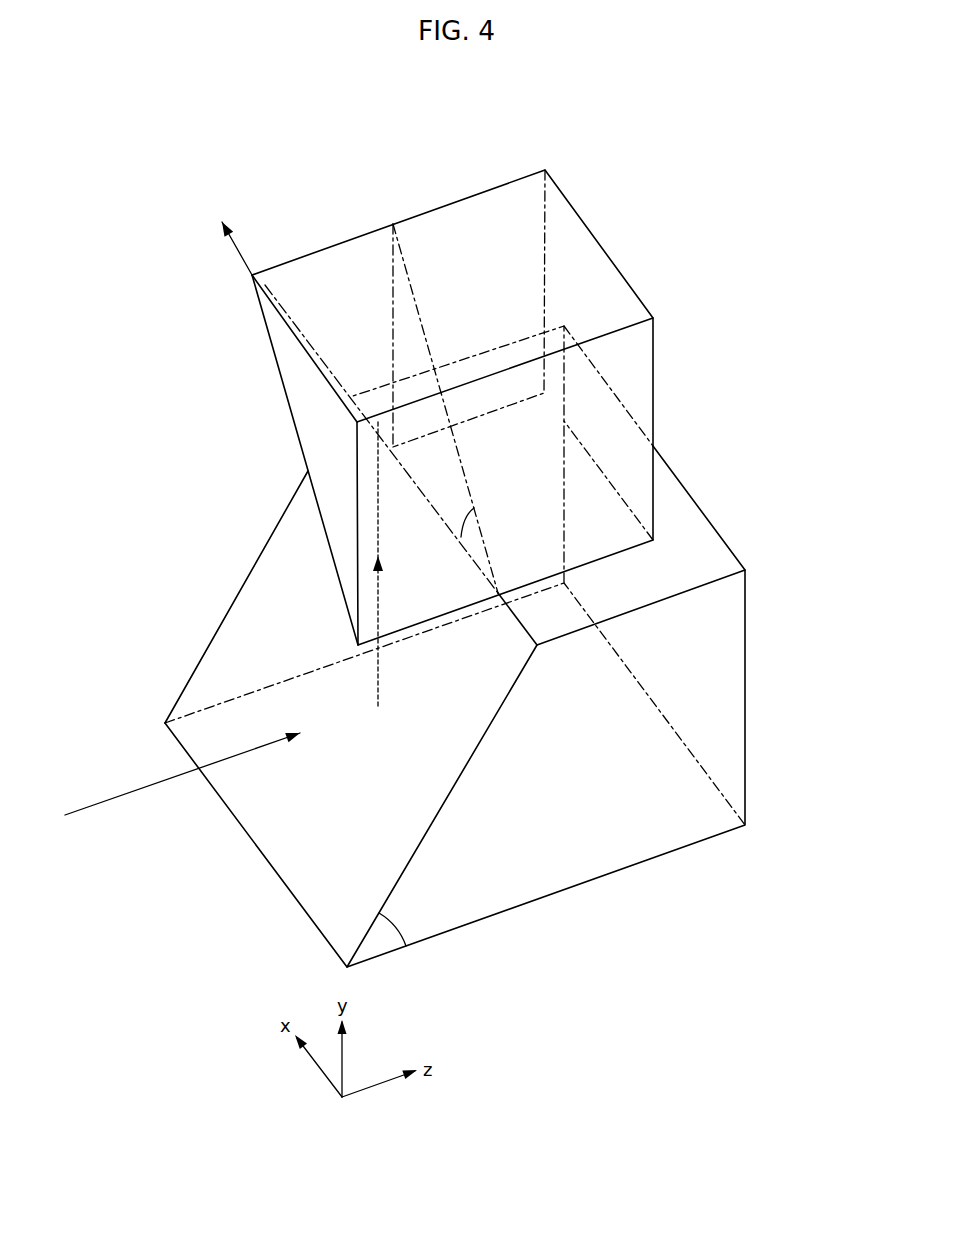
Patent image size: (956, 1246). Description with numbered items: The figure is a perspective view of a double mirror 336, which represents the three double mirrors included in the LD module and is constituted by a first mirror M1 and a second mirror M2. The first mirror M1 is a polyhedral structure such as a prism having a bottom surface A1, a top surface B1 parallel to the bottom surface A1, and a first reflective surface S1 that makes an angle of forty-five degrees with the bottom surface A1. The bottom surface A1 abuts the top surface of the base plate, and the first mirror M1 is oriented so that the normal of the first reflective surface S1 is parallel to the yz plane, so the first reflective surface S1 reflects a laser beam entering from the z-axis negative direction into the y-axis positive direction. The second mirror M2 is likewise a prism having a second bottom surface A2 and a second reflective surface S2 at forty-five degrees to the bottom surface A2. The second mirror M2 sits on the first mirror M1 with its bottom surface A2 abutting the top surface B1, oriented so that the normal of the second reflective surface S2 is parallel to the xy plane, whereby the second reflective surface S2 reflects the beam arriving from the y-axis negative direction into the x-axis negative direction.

The double mirror 336 is at (701, 170).
The first mirror M1 is at (747, 628).
The second mirror M2 is at (655, 372).
The first reflective surface S1 is at (292, 843).
The second reflective surface S2 is at (317, 413).
The bottom surface A1 is at (483, 873).
The second bottom surface A2 is at (540, 468).
The top surface B1 is at (701, 522).